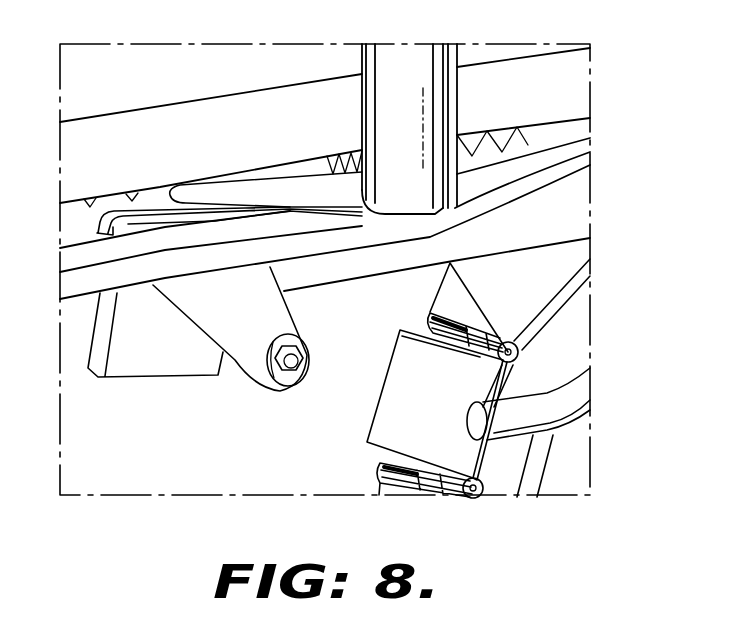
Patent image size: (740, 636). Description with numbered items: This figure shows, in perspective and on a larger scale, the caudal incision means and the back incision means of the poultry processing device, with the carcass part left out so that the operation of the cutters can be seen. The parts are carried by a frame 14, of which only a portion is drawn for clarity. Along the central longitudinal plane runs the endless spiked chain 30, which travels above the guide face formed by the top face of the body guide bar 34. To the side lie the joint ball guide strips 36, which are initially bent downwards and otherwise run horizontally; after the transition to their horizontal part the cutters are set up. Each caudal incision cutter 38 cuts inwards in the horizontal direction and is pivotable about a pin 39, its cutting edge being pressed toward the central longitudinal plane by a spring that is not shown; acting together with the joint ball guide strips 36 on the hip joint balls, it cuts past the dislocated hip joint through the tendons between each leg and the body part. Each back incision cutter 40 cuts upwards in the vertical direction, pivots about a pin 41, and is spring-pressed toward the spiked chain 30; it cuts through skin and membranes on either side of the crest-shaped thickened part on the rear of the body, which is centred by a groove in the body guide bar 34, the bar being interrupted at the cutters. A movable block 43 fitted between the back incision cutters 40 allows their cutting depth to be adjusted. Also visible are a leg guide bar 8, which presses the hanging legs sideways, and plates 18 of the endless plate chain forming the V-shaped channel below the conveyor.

The frame 14 is at (136, 138).
The spiked chain 30 is at (485, 152).
The pin 39 is at (378, 68).
The caudal incision cutter 38 is at (320, 192).
The back incision cutter 40 is at (108, 225).
The joint ball guide strips 36 is at (513, 192).
The body guide bar 34 is at (401, 262).
The movable block 43 is at (145, 357).
The pin 41 is at (310, 367).
The plates 18 is at (383, 422).
The leg guide bars 8 is at (537, 410).